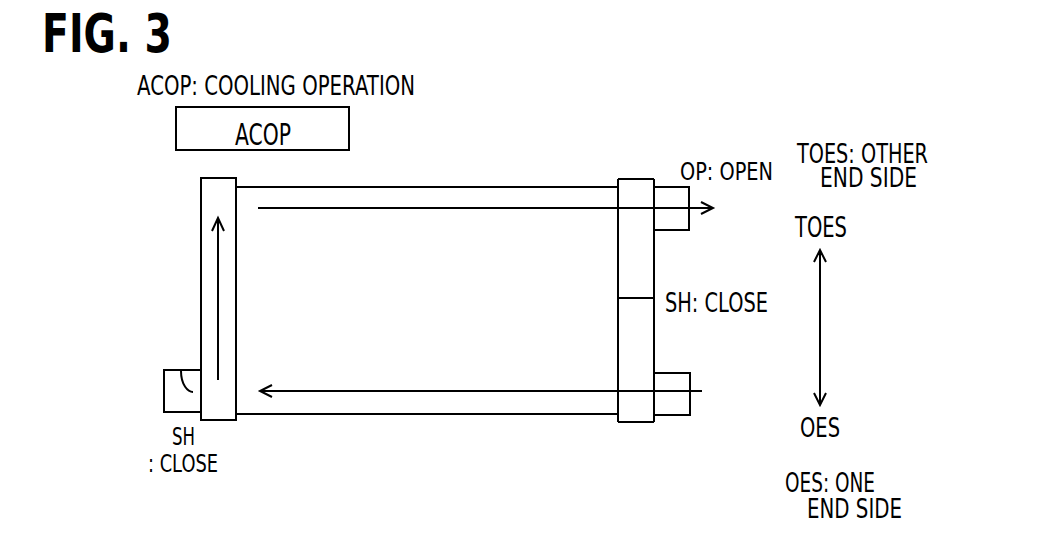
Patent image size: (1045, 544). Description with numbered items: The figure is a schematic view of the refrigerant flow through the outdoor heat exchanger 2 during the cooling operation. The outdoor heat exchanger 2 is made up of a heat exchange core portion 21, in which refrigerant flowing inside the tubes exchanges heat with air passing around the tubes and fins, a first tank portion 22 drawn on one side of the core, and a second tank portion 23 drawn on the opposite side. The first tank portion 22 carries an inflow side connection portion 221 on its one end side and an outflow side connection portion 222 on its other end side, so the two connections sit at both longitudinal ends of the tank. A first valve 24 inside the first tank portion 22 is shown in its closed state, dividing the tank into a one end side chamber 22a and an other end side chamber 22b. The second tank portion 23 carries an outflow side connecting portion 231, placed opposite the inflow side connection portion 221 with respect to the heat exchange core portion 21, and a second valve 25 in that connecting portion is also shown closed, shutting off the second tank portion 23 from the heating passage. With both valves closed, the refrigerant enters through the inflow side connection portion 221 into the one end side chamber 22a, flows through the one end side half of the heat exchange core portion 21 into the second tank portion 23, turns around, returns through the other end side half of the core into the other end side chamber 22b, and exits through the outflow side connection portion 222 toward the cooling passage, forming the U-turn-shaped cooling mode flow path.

The outdoor heat exchanger 2 is at (485, 172).
The heat exchange core portion 21 is at (418, 255).
The first tank portion 22 is at (633, 423).
The one end side chamber 22a is at (637, 348).
The other end side chamber 22b is at (635, 243).
The inflow side connection portion 221 is at (675, 417).
The outflow side connection portion 222 is at (670, 187).
The second tank portion 23 is at (218, 420).
The outflow side connecting portion 231 is at (172, 412).
The first valve 24 is at (637, 296).
The second valve 25 is at (181, 370).